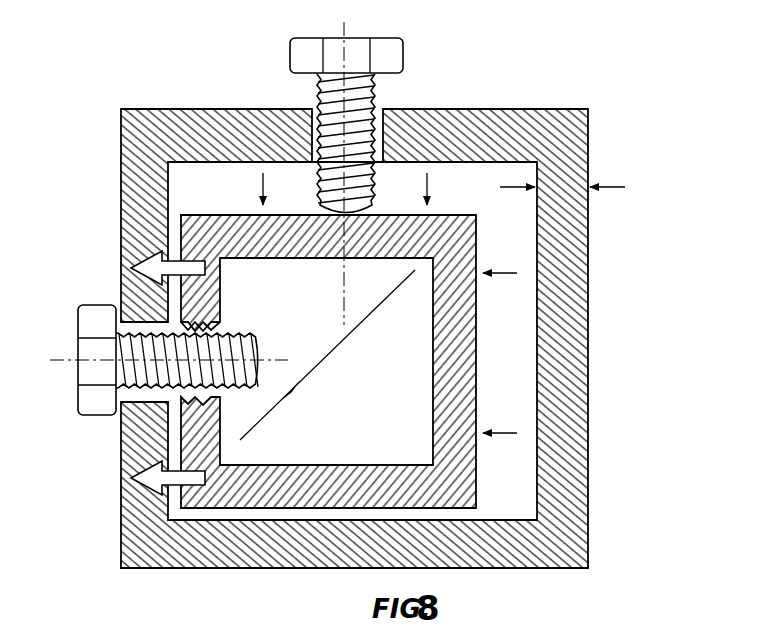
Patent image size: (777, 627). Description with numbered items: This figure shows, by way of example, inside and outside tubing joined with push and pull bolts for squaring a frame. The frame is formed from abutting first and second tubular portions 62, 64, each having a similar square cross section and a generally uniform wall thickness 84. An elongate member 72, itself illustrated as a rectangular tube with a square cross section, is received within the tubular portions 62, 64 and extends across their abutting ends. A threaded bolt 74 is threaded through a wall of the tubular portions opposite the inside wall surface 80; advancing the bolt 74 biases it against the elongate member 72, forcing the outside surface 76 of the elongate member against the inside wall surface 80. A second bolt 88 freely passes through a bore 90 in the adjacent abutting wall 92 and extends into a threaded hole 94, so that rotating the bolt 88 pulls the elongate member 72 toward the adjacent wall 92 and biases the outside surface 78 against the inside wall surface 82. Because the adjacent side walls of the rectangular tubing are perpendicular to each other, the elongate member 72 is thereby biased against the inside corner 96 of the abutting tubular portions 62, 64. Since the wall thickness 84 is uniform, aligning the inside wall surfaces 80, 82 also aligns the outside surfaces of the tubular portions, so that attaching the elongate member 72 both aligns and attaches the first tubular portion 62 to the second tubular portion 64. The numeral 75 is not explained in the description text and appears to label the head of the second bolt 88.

The first tubular portion 62 is at (411, 338).
The second tubular portion 64 is at (590, 345).
The elongate member 72 is at (478, 303).
The threaded bolt 74 is at (403, 44).
The side set screw head 75 is at (97, 405).
The outside surface of elongate member 76 is at (240, 510).
The outside surface of elongate member 78 is at (181, 447).
The inside wall surface 80 is at (296, 520).
The inside wall surface 82 is at (175, 215).
The wall thickness 84 is at (613, 187).
The second bolt 88 is at (100, 316).
The bore 90 is at (135, 300).
The adjacent abutting wall 92 is at (128, 190).
The threaded hole 94 is at (200, 322).
The inside corner 96 is at (183, 513).